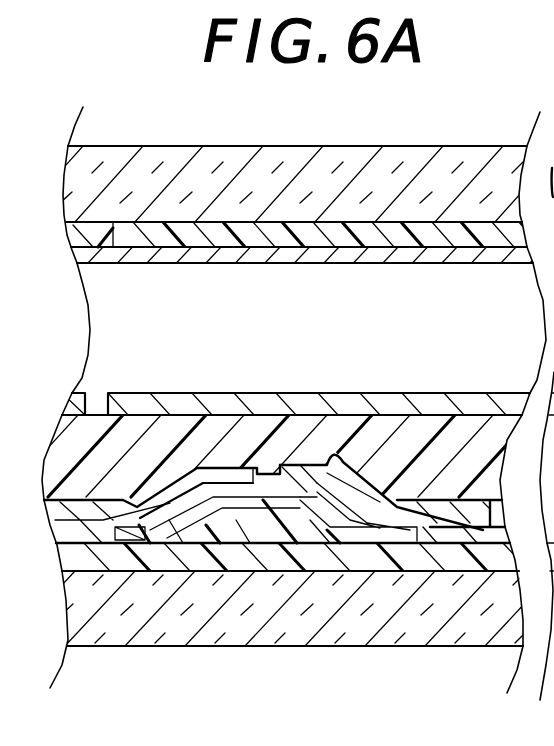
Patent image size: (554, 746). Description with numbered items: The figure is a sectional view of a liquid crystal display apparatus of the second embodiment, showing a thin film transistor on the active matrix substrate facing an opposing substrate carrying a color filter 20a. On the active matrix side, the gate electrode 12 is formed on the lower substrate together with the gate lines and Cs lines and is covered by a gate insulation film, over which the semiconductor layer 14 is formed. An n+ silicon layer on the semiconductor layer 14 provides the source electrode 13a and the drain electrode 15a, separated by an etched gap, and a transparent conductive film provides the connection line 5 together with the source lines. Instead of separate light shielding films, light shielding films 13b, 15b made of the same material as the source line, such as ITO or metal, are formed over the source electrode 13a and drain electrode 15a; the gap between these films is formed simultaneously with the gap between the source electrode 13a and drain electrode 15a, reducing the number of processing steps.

The color filter 20a is at (97, 232).
The light shielding film 13b is at (174, 477).
The semiconductor layer 14 is at (372, 478).
The light shielding film 15b is at (430, 500).
The source electrode 13a is at (136, 550).
The gate electrode 12 is at (258, 600).
The drain electrode 15a is at (395, 545).
The connection line 5 is at (480, 533).